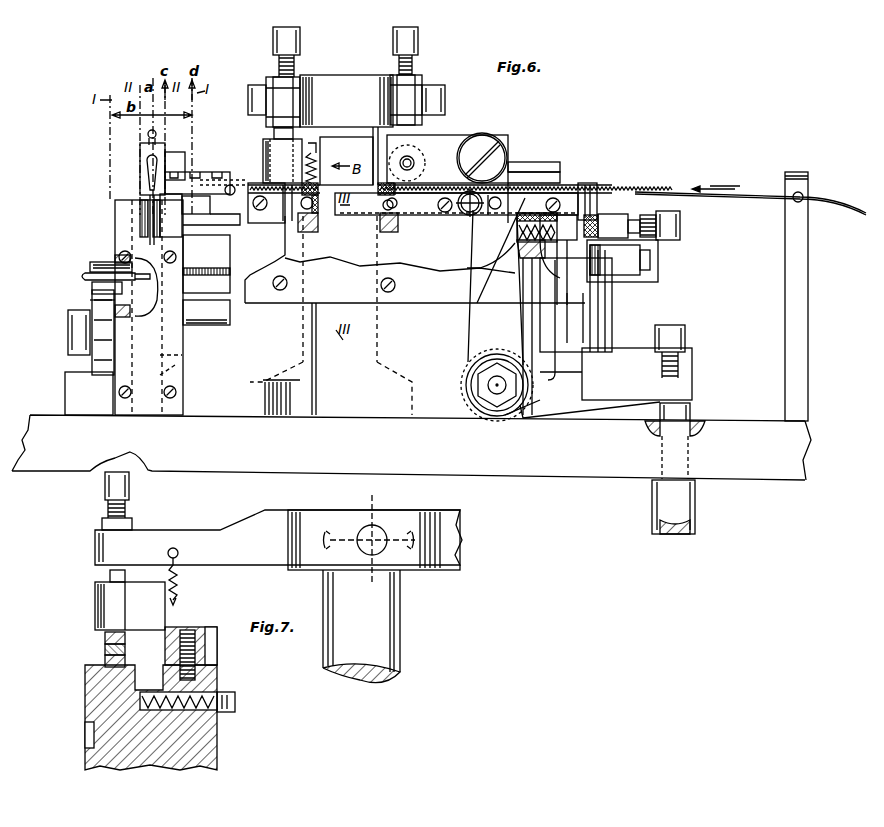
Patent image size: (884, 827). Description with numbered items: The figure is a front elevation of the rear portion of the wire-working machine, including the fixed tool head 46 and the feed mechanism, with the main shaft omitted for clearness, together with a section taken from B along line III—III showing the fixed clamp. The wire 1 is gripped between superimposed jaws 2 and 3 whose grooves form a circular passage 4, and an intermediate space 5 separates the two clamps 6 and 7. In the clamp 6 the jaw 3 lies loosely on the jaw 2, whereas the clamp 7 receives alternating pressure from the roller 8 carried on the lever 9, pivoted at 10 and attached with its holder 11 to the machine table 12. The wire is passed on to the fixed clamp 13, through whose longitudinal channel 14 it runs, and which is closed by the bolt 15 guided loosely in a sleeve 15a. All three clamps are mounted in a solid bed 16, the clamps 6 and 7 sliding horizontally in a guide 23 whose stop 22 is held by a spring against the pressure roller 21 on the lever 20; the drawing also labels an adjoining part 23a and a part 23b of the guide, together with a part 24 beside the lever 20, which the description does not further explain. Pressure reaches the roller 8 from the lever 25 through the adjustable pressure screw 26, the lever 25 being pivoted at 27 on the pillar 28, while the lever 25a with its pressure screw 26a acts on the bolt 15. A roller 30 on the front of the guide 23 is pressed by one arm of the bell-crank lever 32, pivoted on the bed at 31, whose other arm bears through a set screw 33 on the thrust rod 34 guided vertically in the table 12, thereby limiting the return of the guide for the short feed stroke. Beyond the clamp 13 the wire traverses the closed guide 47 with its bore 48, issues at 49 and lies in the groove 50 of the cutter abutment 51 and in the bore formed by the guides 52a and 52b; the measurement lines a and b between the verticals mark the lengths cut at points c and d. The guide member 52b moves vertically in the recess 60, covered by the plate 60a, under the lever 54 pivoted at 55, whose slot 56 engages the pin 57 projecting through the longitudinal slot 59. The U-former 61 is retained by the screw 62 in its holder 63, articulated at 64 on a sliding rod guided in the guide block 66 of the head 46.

In FIG. 6, the wire 1 is at (645, 196).
In FIG. 6, the lower jaw 2 is at (378, 203).
In FIG. 6, the upper jaw 3 is at (377, 168).
In FIG. 6, the circular passage 4 is at (383, 198).
In FIG. 6, the intermediate space 5 is at (497, 175).
In FIG. 6, the clamp 6 is at (522, 182).
In FIG. 6, the clamp 7 is at (437, 186).
In FIG. 6, the pressure roller 8 is at (412, 163).
In FIG. 6, the lever 9 is at (448, 148).
In FIG. 6, the pivot 10 is at (497, 154).
In FIG. 6, the holder 11 is at (515, 182).
In FIG. 6, the machine table 12 is at (570, 470).
In FIG. 6, the fixed clamp 13 is at (314, 175).
In FIG. 7, the fixed clamp 13 is at (108, 640).
In FIG. 6, the longitudinal channel 14 is at (348, 212).
In FIG. 7, the longitudinal channel 14 is at (125, 650).
In FIG. 6, the bolt 15 is at (274, 131).
In FIG. 7, the bolt 15 is at (110, 576).
In FIG. 6, the sleeve 15a is at (270, 156).
In FIG. 7, the sleeve 15a is at (200, 634).
In FIG. 6, the bed 16 is at (330, 246).
In FIG. 7, the bed 16 is at (95, 718).
In FIG. 6, the lever 20 is at (650, 279).
In FIG. 6, the pressure roller 21 is at (616, 262).
In FIG. 6, the stop 22 is at (580, 264).
In FIG. 6, the guide 23 is at (482, 250).
In FIG. 6, the lever arm 23a is at (474, 259).
In FIG. 6, the spring 23b is at (535, 222).
In FIG. 6, the adjusting screw 24 is at (600, 220).
In FIG. 6, the lever 25 is at (414, 98).
In FIG. 6, the lever 25a is at (283, 102).
In FIG. 7, the lever 25a is at (253, 520).
In FIG. 6, the adjustable pressure screw 26 is at (413, 62).
In FIG. 6, the pressure screw 26a is at (281, 66).
In FIG. 7, the pressure screw 26a is at (108, 503).
In FIG. 6, the pivot 27 is at (446, 99).
In FIG. 6, the pillar 28 is at (350, 73).
In FIG. 7, the pillar 28 is at (398, 602).
In FIG. 6, the roller 30 is at (465, 215).
In FIG. 6, the pivot 31 is at (488, 387).
In FIG. 6, the bell-crank lever 32 is at (470, 338).
In FIG. 6, the set screw 33 is at (686, 338).
In FIG. 6, the thrust rod 34 is at (692, 411).
In FIG. 6, the tool head 46 is at (115, 222).
In FIG. 6, the closed guide 47 is at (218, 165).
In FIG. 6, the bore 48 is at (235, 196).
In FIG. 6, the guide outlet 49 is at (196, 205).
In FIG. 6, the groove 50 is at (171, 215).
In FIG. 6, the abutment 51 is at (190, 178).
In FIG. 6, the guide 52a is at (145, 290).
In FIG. 6, the guide member 52b is at (140, 205).
In FIG. 6, the lever 54 is at (110, 262).
In FIG. 6, the pivot 55 is at (78, 330).
In FIG. 6, the slot 56 is at (92, 264).
In FIG. 6, the pin 57 is at (82, 276).
In FIG. 6, the longitudinal slot 59 is at (115, 300).
In FIG. 6, the recess 60 is at (182, 361).
In FIG. 6, the plate 60a is at (120, 367).
In FIG. 6, the U-former 61 is at (140, 172).
In FIG. 6, the screw 62 is at (148, 134).
In FIG. 6, the holder 63 is at (140, 157).
In FIG. 6, the articulation 64 is at (140, 178).
In FIG. 6, the guide block 66 is at (176, 152).